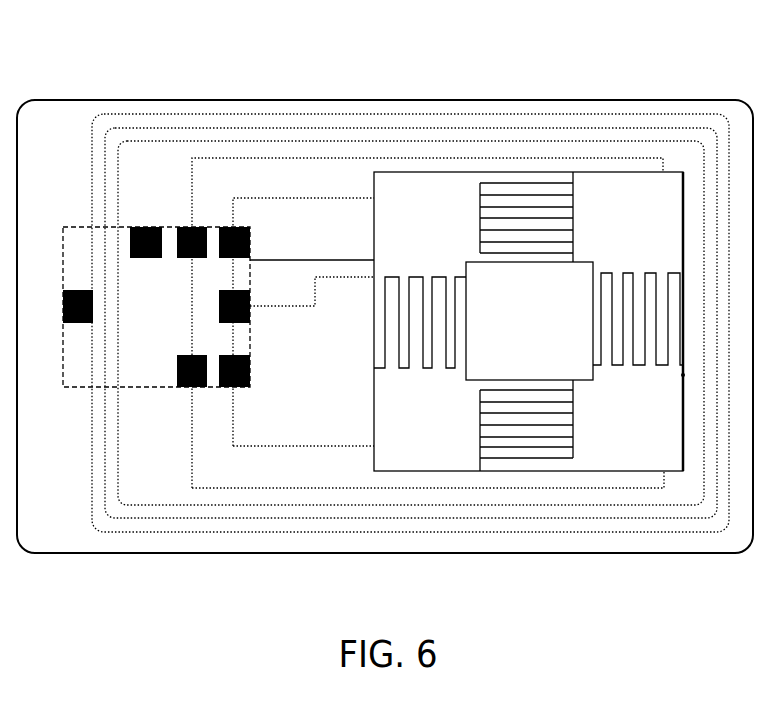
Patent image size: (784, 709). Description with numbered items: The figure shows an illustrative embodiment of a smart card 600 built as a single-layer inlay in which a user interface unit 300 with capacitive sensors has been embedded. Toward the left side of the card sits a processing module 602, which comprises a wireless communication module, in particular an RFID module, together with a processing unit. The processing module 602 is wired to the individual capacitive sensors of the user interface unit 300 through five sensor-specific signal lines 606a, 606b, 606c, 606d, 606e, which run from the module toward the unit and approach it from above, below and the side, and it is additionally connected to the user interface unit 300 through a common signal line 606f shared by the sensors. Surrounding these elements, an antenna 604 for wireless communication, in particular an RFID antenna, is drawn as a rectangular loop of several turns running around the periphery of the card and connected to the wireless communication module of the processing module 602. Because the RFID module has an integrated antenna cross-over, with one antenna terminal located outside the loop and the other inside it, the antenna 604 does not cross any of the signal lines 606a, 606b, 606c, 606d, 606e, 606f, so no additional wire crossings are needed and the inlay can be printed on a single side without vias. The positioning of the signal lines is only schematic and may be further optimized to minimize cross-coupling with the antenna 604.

The smart card 600 is at (155, 100).
The user interface unit 300 is at (490, 172).
The processing module 602 is at (80, 388).
The antenna 604 is at (105, 463).
The sensor-specific signal line 606a is at (335, 158).
The sensor-specific signal line 606b is at (335, 198).
The sensor-specific signal line 606c is at (325, 444).
The sensor-specific signal line 606d is at (305, 486).
The sensor-specific signal line 606e is at (283, 306).
The common signal line 606f is at (328, 260).